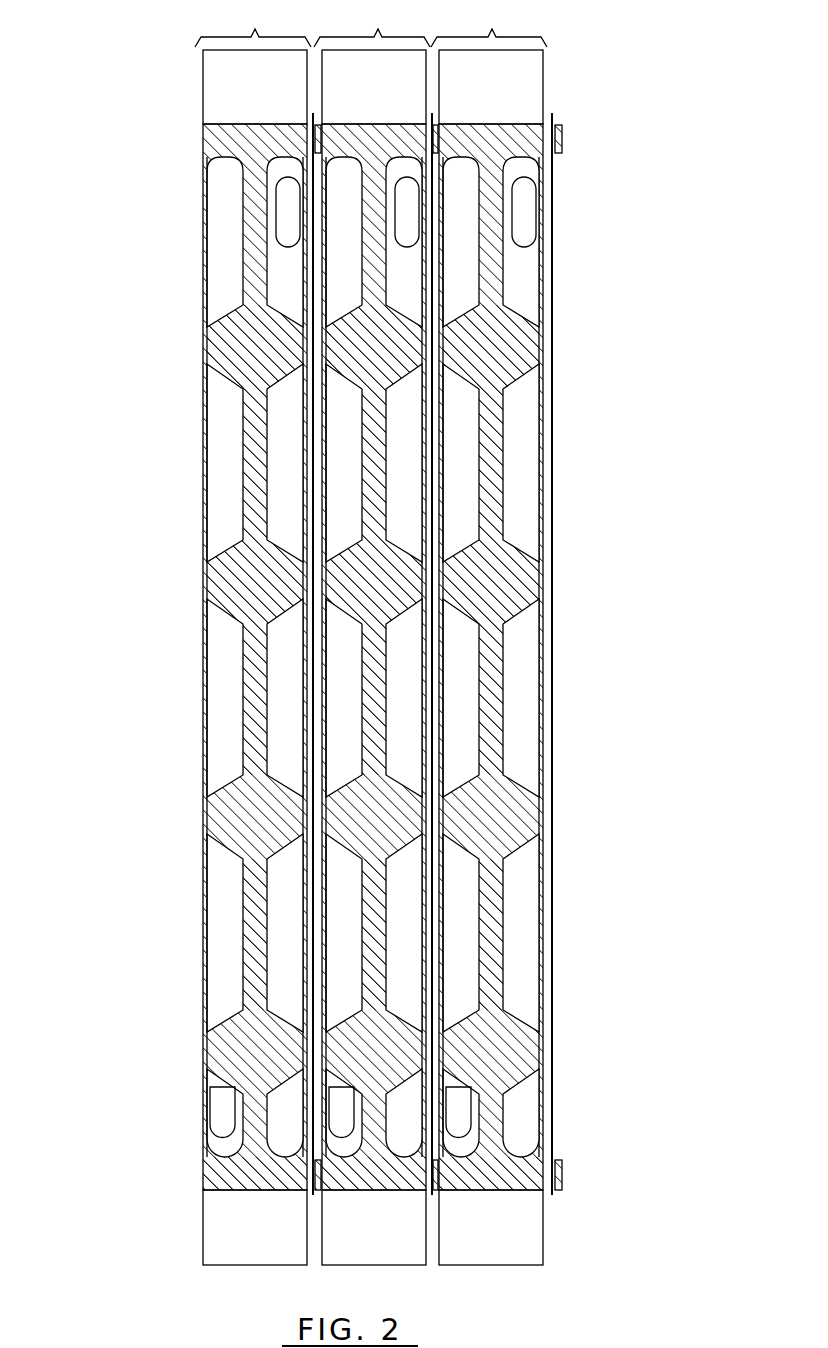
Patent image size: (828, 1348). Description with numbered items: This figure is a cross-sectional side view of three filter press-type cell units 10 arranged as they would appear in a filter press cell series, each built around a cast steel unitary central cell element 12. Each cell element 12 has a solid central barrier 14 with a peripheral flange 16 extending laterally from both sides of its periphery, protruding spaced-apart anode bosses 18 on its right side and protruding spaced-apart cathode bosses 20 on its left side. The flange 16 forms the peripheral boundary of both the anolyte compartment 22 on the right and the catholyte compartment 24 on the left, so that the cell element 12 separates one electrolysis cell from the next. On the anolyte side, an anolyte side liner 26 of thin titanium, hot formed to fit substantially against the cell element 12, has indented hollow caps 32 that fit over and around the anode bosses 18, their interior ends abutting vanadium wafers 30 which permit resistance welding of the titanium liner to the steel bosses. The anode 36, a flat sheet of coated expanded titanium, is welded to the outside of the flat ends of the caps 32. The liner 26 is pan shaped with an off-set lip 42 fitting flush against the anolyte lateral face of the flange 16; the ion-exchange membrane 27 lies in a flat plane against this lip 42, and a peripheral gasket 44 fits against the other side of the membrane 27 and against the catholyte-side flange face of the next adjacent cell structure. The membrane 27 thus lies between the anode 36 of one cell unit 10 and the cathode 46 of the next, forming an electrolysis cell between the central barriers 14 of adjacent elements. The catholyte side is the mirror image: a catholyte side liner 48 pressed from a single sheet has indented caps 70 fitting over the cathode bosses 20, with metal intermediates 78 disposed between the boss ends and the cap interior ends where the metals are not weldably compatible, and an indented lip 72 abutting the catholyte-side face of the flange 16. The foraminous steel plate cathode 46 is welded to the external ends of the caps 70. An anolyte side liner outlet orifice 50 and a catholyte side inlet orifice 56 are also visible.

The filter press-type cell unit 10 is at (255, 32).
The unitary central cell element 12 is at (228, 1268).
The central barrier 14 is at (258, 467).
The peripheral flange 16 is at (245, 122).
The anode bosses 18 is at (292, 340).
The cathode bosses 20 is at (236, 330).
The anolyte compartment 22 is at (297, 727).
The catholyte compartment 24 is at (233, 727).
The anolyte side liner 26 is at (270, 472).
The ion-exchange membrane 27 is at (552, 620).
The vanadium wafers 30 is at (300, 368).
The indented hollow caps 32 is at (296, 855).
The anode 36 is at (295, 777).
The off-set lip 42 is at (525, 1185).
The peripheral gasket 44 is at (562, 130).
The cathode 46 is at (204, 732).
The catholyte side liner 48 is at (244, 967).
The anolyte side liner outlet orifice 50 is at (527, 200).
The catholyte side inlet orifice 56 is at (222, 1117).
The cathode boss indented caps 70 is at (222, 855).
The indented lip 72 is at (230, 1183).
The metal intermediates 78 is at (225, 372).